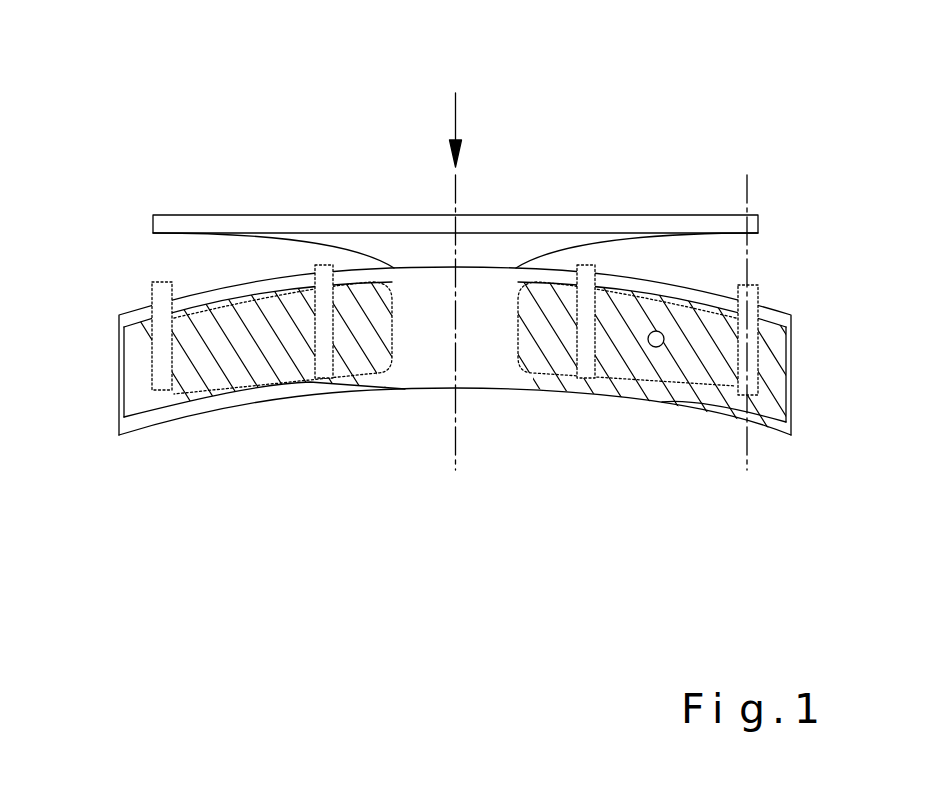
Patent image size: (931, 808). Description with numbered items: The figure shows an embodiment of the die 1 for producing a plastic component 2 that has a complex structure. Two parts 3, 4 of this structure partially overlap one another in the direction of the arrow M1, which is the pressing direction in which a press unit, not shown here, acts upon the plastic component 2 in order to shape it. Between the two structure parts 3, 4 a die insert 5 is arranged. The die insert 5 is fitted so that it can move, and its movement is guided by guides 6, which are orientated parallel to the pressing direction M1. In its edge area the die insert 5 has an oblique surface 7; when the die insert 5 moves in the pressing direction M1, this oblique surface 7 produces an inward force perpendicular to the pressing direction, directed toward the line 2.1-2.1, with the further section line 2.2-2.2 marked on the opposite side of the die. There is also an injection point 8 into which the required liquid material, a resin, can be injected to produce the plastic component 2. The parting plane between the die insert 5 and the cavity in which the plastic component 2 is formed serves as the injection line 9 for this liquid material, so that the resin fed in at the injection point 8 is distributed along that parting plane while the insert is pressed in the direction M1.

The die 1 is at (263, 168).
The plastic component 2 is at (468, 345).
The structure part 3 is at (137, 311).
The structure part 4 is at (195, 406).
The die insert 5 is at (250, 362).
The guide 6 is at (163, 372).
The oblique face 7 is at (117, 375).
The injection point 8 is at (650, 345).
The injection line 9 is at (670, 400).
The pressing direction M1 is at (460, 127).
The section line 2.1 is at (430, 190).
The section line 2.2 is at (720, 190).